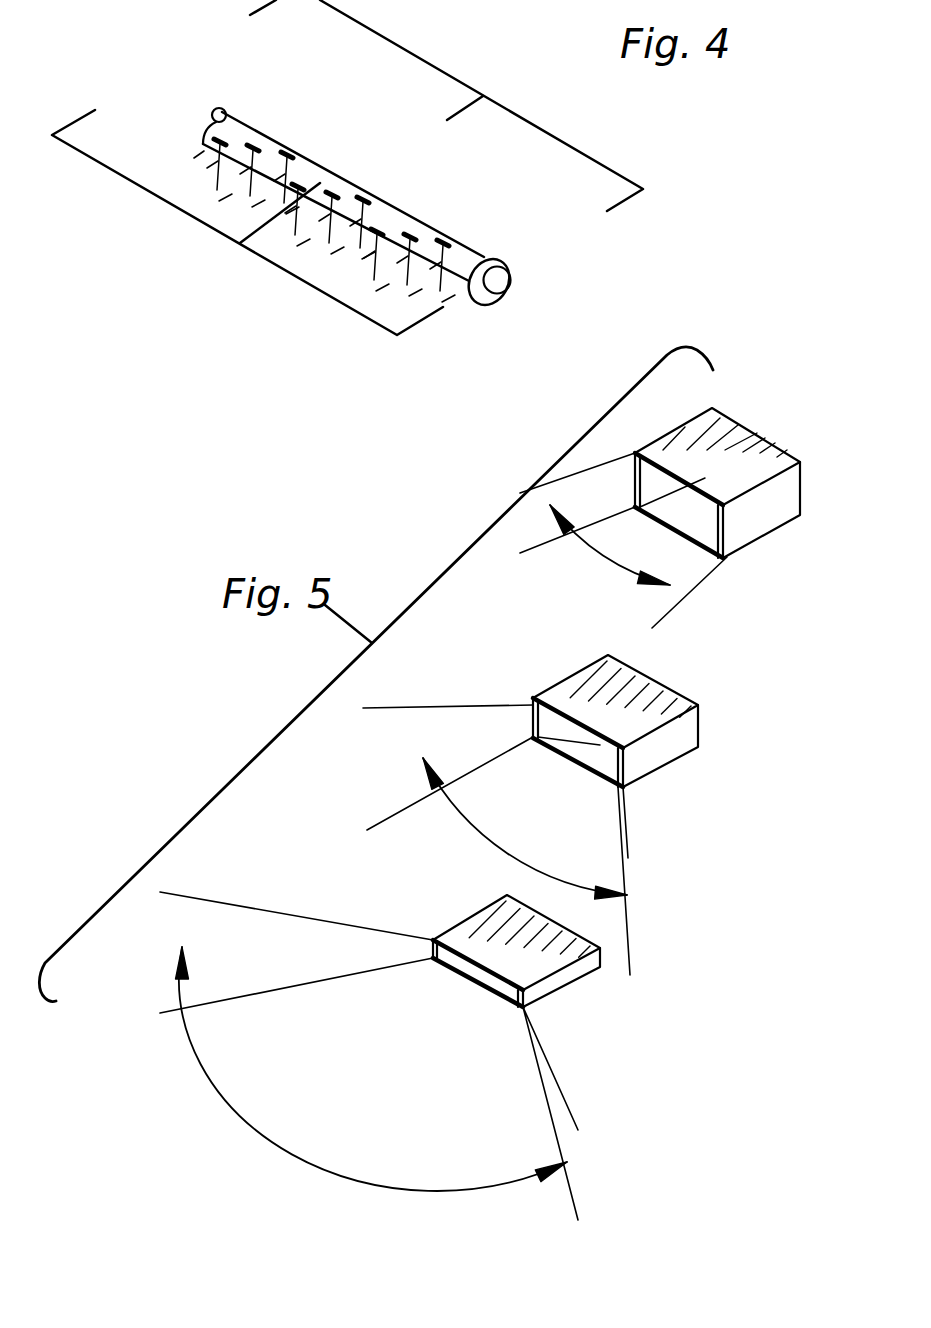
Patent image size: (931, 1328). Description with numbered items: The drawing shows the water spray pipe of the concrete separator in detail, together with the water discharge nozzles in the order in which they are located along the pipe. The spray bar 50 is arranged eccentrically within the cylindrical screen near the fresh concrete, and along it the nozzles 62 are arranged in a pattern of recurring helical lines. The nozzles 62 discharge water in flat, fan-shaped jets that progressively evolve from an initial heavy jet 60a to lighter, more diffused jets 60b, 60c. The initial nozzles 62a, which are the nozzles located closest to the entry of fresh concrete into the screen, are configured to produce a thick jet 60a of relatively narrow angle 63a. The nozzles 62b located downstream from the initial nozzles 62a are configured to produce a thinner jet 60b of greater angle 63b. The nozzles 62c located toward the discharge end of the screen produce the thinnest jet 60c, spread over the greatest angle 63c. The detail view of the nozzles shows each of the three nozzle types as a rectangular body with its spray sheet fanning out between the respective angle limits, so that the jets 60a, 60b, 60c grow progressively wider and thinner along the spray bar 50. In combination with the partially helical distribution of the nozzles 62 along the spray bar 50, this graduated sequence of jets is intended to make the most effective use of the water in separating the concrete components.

In FIG. 4, the spray bar 50 is at (480, 252).
In FIG. 4, the nozzles 62 is at (348, 158).
In FIG. 4, the initial nozzles 62a is at (288, 153).
In FIG. 5, the initial nozzles 62a is at (773, 515).
In FIG. 4, the nozzles 62b is at (364, 199).
In FIG. 5, the nozzles 62b is at (668, 752).
In FIG. 4, the nozzles 62c is at (443, 242).
In FIG. 5, the nozzles 62c is at (577, 970).
In FIG. 4, the heavy jet 60a is at (188, 158).
In FIG. 5, the heavy jet 60a is at (688, 590).
In FIG. 4, the jet 60b is at (338, 230).
In FIG. 5, the jet 60b is at (623, 870).
In FIG. 4, the jet 60c is at (145, 117).
In FIG. 5, the jet 60c is at (572, 1113).
In FIG. 5, the angle 63a is at (610, 560).
In FIG. 5, the angle 63b is at (483, 837).
In FIG. 5, the angle 63c is at (298, 1157).